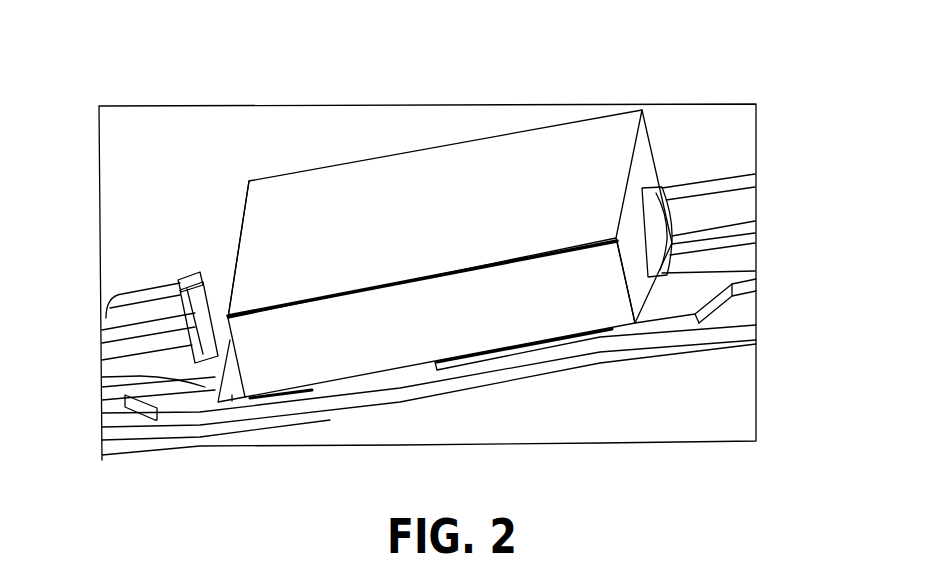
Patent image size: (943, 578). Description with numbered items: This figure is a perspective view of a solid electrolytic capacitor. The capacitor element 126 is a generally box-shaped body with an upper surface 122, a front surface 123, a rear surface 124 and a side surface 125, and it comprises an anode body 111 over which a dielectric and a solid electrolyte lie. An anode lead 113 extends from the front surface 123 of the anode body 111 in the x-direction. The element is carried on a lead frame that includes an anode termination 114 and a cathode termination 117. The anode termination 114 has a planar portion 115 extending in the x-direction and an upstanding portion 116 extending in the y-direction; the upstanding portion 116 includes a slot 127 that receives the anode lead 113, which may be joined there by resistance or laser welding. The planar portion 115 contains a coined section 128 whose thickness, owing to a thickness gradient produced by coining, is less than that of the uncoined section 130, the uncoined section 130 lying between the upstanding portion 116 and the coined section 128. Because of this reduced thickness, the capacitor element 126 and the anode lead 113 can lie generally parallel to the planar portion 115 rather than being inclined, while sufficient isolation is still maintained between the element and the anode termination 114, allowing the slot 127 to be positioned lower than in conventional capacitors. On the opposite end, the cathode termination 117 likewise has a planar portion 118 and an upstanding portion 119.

The anode body 111 is at (474, 205).
The anode lead 113 is at (216, 292).
The anode termination 114 is at (103, 376).
The planar portion 115 is at (172, 412).
The upstanding portion 116 is at (103, 329).
The cathode termination 117 is at (757, 272).
The planar portion 118 is at (613, 337).
The upstanding portion 119 is at (753, 223).
The upper surface 122 is at (350, 178).
The front surface 123 is at (245, 213).
The rear surface 124 is at (652, 143).
The side surface 125 is at (525, 320).
The capacitor element 126 is at (547, 160).
The slot 127 is at (183, 278).
The coined section 128 is at (232, 396).
The uncoined section 130 is at (100, 392).